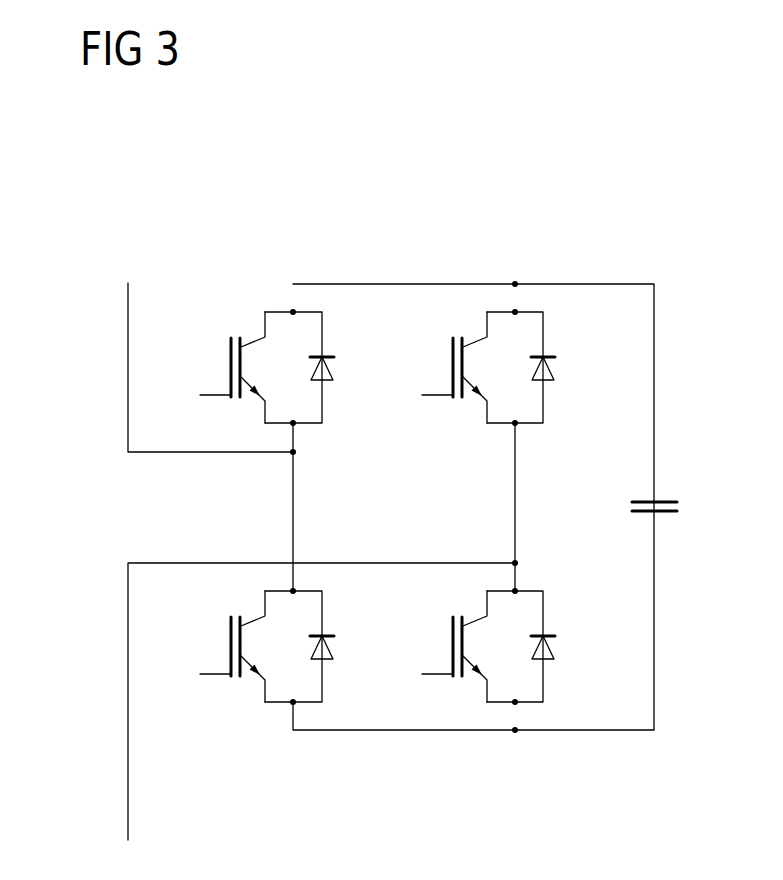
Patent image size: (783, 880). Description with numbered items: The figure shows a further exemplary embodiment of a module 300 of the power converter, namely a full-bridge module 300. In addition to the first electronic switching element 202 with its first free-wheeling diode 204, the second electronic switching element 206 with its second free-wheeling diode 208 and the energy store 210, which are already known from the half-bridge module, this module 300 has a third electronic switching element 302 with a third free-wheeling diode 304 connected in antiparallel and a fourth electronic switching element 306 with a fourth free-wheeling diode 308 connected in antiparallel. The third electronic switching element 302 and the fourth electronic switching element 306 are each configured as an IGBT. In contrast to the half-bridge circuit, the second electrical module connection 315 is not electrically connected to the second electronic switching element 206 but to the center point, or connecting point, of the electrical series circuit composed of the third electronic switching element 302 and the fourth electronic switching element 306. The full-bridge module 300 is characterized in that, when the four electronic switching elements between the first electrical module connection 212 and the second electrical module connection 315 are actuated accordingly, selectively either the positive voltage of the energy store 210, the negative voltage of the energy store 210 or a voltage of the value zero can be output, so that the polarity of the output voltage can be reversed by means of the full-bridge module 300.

The module 300 is at (598, 194).
The first electronic switching element 202 is at (230, 362).
The first free-wheeling diode 204 is at (335, 370).
The second electronic switching element 206 is at (230, 641).
The second free-wheeling diode 208 is at (335, 649).
The energy store 210 is at (680, 509).
The first electrical module connection 212 is at (128, 334).
The third electronic switching element 302 is at (453, 345).
The third free-wheeling diode 304 is at (549, 368).
The fourth electronic switching element 306 is at (453, 624).
The fourth free-wheeling diode 308 is at (549, 647).
The second electrical module connection 315 is at (128, 787).